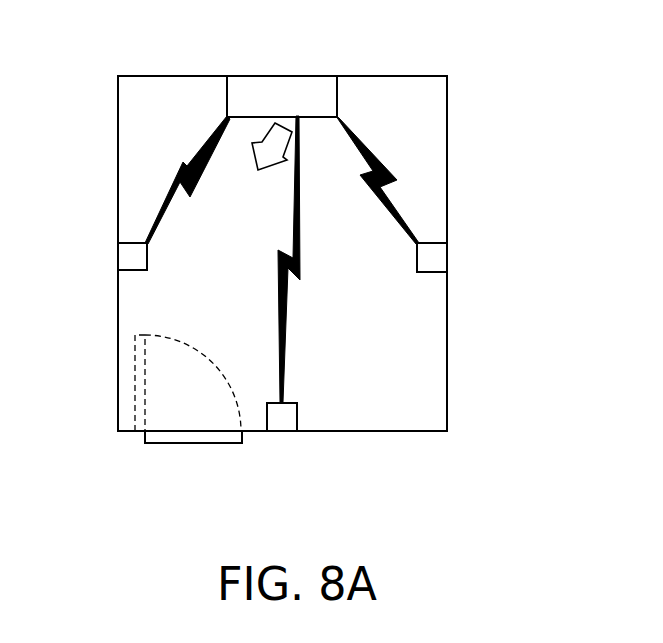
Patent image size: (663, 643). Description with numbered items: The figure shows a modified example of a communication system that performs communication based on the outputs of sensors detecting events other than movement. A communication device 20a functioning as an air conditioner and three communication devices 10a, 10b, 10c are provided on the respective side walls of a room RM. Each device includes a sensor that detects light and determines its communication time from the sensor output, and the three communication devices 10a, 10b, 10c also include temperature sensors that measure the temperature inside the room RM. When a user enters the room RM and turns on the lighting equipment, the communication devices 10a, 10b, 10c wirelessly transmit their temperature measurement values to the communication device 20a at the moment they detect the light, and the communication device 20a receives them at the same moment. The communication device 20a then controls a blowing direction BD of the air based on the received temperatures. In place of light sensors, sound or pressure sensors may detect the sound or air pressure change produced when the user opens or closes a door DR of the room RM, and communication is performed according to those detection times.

The room RM is at (414, 72).
The communication device 20a is at (286, 90).
The communication device 10a is at (122, 257).
The communication device 10b is at (437, 260).
The communication device 10c is at (282, 423).
The door DR is at (190, 434).
The blowing direction BD is at (263, 173).